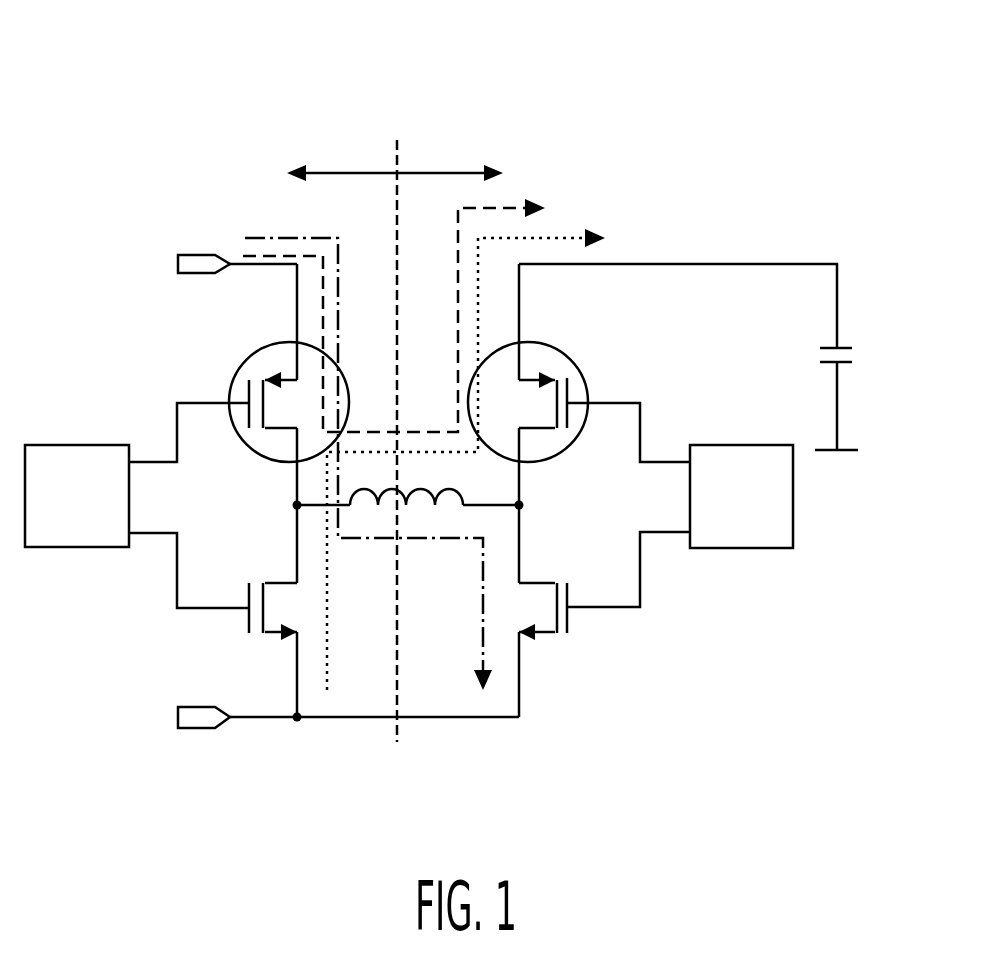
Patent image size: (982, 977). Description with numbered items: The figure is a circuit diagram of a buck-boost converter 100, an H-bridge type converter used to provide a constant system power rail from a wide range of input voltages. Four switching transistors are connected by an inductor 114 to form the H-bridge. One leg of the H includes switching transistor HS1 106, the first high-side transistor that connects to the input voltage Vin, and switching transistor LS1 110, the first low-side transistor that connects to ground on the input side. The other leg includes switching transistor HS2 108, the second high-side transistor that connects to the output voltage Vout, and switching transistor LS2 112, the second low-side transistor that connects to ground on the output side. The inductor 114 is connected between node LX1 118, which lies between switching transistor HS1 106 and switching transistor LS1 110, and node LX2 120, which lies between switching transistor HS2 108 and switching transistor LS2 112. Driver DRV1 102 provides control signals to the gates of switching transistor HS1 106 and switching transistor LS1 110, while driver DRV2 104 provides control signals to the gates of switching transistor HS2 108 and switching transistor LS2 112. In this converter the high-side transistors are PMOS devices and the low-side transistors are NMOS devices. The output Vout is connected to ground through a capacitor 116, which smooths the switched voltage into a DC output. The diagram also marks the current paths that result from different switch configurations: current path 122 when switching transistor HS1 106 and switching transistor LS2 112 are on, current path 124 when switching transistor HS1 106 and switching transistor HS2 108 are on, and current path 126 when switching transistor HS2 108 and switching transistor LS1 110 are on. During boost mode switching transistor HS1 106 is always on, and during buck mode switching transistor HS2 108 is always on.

The buck-boost converter 100 is at (121, 70).
The driver DRV1 102 is at (72, 548).
The driver DRV2 104 is at (743, 548).
The switching transistor HS1 106 is at (257, 412).
The switching transistor HS2 108 is at (569, 392).
The switching transistor LS1 110 is at (277, 634).
The switching transistor LS2 112 is at (542, 634).
The inductor 114 is at (461, 494).
The capacitor 116 is at (832, 366).
The node LX1 118 is at (294, 510).
The node LX2 120 is at (522, 510).
The current path 122 is at (425, 542).
The current path 124 is at (507, 205).
The current path 126 is at (572, 235).